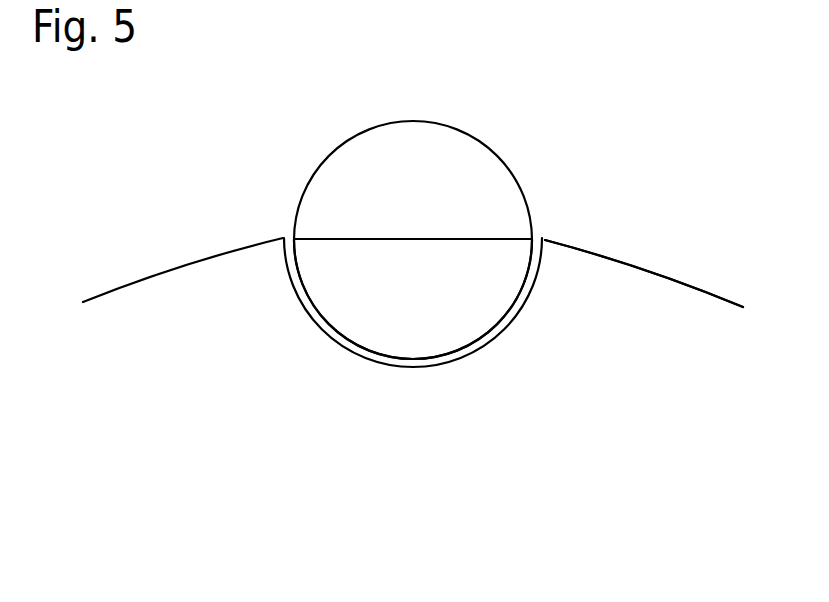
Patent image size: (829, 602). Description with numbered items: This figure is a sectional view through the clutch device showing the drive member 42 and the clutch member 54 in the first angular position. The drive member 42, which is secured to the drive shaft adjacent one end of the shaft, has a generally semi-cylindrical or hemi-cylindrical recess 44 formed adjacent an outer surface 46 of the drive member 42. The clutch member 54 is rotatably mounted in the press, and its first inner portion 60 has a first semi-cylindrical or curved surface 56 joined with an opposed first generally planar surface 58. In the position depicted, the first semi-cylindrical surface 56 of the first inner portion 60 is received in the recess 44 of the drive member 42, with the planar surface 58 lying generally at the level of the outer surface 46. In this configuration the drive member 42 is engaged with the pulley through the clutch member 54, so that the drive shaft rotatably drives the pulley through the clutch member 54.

The drive member 42 is at (704, 293).
The recess 44 is at (510, 322).
The outer surface 46 is at (601, 255).
The clutch member 54 is at (300, 198).
The first semi-cylindrical surface 56 is at (347, 336).
The first planar surface 58 is at (405, 238).
The first inner portion 60 is at (465, 347).